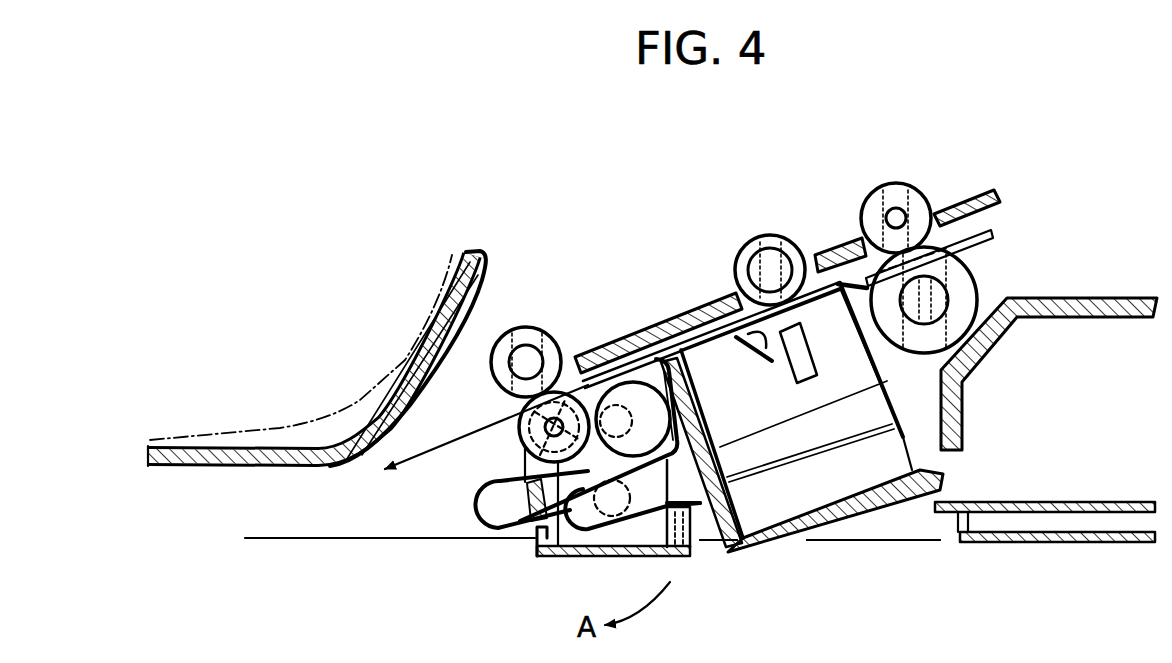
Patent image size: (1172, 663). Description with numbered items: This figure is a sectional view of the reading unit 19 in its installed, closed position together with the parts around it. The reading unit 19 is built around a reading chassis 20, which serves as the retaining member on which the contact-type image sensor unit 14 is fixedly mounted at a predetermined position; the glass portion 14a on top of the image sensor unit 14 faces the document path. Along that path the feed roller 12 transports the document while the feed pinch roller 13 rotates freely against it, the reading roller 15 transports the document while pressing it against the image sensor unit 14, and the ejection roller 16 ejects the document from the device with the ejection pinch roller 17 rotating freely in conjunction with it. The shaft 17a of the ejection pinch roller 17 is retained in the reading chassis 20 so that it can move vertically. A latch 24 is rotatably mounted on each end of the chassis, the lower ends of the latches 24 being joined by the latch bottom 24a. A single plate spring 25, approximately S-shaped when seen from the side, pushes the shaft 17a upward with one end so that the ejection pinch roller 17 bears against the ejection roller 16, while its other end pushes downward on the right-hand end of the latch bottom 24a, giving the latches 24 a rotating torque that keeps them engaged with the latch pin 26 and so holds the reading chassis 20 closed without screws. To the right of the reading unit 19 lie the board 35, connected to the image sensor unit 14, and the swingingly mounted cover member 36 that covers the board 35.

The feed roller 12 is at (970, 287).
The feed pinch roller 13 is at (905, 192).
The contact-type image sensor unit 14 is at (777, 400).
The glass portion 14a is at (717, 330).
The reading roller 15 is at (775, 260).
The ejection roller 16 is at (537, 337).
The ejection pinch roller 17 is at (532, 433).
The shaft 17a is at (566, 392).
The reading unit 19 is at (733, 575).
The reading chassis 20 is at (838, 508).
The latch 24 is at (540, 530).
The latch bottom 24a is at (593, 557).
The plate spring 25 is at (580, 525).
The latch pin 26 is at (708, 403).
The board 35 is at (1050, 500).
The cover member 36 is at (1050, 543).